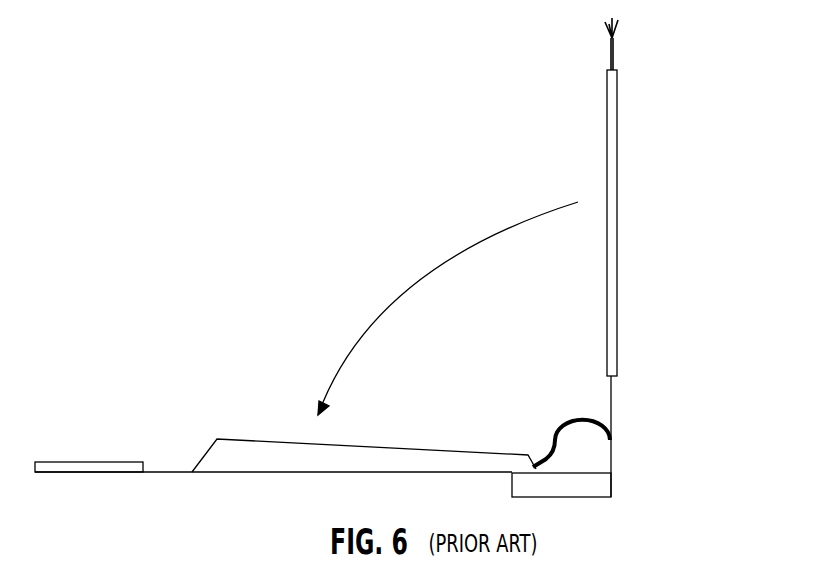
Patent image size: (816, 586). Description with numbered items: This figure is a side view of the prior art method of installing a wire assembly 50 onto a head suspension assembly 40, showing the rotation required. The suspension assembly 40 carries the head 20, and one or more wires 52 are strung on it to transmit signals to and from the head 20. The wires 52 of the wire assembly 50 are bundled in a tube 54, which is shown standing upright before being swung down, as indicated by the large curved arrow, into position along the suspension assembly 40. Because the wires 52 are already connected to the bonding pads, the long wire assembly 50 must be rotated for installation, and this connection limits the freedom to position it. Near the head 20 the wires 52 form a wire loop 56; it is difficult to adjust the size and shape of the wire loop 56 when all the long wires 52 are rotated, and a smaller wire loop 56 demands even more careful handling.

The head 20 is at (597, 499).
The suspension assembly 40 is at (275, 441).
The wire assembly 50 is at (488, 122).
The wires 52 is at (615, 47).
The tube 54 is at (615, 162).
The wire loop 56 is at (570, 418).